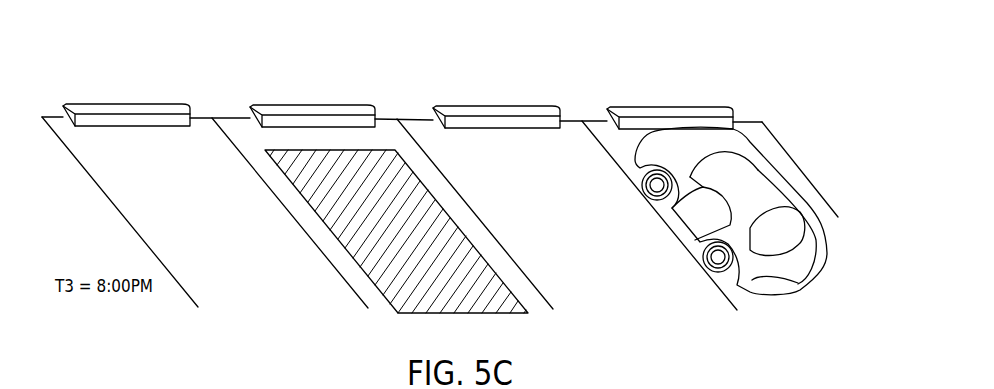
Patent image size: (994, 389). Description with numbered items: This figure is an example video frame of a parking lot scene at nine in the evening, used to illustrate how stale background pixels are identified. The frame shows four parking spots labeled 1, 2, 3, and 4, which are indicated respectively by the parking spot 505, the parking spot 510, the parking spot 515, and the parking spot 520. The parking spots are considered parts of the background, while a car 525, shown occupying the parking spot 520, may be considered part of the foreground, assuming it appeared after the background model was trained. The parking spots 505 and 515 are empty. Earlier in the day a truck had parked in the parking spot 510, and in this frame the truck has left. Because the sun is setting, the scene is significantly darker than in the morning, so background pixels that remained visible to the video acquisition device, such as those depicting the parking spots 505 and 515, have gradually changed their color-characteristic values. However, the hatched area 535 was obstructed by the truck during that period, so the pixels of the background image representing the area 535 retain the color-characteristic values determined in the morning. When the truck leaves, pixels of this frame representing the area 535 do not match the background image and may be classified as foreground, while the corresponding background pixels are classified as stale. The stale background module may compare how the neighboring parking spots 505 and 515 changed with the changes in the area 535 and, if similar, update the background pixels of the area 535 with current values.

The parking spot 1 is at (124, 104).
The parking spot 2 is at (309, 105).
The parking spot 3 is at (493, 106).
The parking spot 4 is at (667, 107).
The parking spot 505 is at (142, 170).
The parking spot 510 is at (315, 225).
The parking spot 515 is at (590, 258).
The parking spot 520 is at (627, 140).
The car 525 is at (752, 192).
The area 535 is at (410, 273).